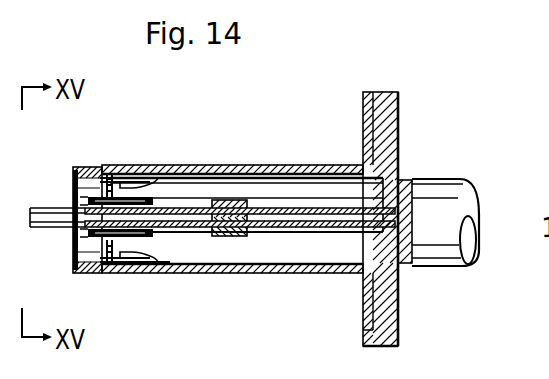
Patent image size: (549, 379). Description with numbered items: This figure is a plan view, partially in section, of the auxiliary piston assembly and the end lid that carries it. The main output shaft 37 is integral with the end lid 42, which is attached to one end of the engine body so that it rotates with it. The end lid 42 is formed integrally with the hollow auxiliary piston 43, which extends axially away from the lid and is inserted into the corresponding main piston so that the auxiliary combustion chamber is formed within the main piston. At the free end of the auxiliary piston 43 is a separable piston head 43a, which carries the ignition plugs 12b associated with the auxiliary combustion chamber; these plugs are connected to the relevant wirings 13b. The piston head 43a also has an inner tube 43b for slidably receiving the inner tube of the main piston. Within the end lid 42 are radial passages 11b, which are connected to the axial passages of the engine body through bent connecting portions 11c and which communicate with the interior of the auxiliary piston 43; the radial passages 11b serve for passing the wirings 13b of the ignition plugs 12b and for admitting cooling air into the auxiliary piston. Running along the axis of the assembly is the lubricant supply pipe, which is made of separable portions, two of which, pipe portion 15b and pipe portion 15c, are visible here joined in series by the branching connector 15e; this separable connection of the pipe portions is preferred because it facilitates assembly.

The radial passage 11b is at (397, 126).
The bent connecting portion 11c is at (362, 106).
The ignition plug 12b is at (107, 173).
The wiring 13b is at (147, 178).
The pipe portion 15b is at (46, 228).
The pipe portion 15c is at (290, 234).
The branching connector 15e is at (235, 200).
The main output shaft 37 is at (456, 179).
The end lid 42 is at (395, 93).
The auxiliary piston 43 is at (200, 165).
The piston head 43a is at (82, 170).
The inner tube 43b is at (160, 238).